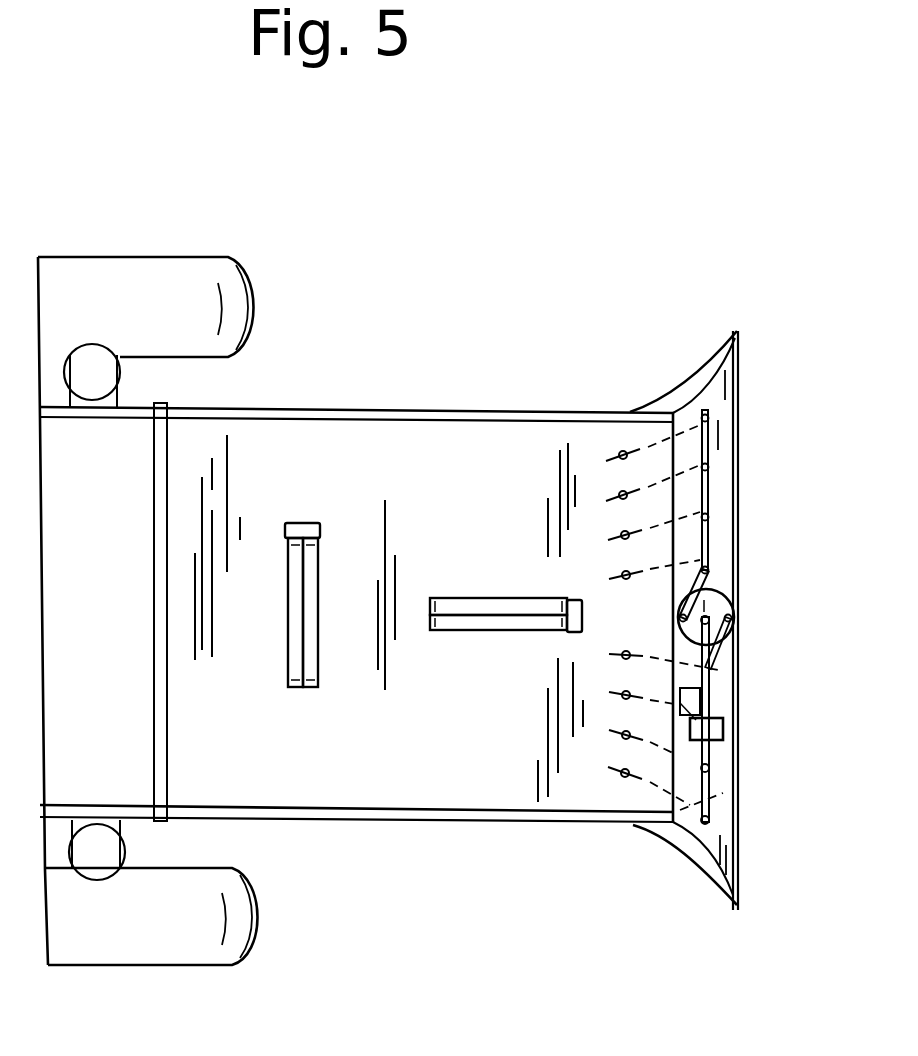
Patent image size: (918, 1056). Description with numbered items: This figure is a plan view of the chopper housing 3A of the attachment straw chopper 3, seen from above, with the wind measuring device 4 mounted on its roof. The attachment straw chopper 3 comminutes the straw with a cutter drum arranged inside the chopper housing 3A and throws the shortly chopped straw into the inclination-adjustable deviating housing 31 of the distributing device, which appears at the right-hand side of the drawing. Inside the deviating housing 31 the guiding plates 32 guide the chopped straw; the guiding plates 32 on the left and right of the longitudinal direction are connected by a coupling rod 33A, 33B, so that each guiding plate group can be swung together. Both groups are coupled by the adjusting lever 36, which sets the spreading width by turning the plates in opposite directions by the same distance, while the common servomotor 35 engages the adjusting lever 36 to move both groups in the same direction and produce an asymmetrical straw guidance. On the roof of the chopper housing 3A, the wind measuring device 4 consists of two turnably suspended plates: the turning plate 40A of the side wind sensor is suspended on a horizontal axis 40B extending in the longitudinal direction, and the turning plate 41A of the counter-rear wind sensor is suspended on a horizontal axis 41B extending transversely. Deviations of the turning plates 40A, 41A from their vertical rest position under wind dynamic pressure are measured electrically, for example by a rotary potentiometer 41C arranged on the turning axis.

The attachment straw chopper 3 is at (373, 398).
The chopper housing 3A is at (392, 820).
The wind measuring device 4 is at (397, 597).
The deviating housing 31 is at (665, 362).
The guiding plates 32 is at (696, 565).
The coupling rod 33A is at (705, 785).
The coupling rod 33B is at (655, 442).
The common servomotor 35 is at (687, 703).
The adjusting lever 36 is at (713, 610).
The turning plate 40A is at (480, 632).
The horizontal axis 40B is at (450, 612).
The turning plate 41A is at (318, 660).
The horizontal axis 41B is at (303, 633).
The rotary potentiometer 41C is at (308, 528).